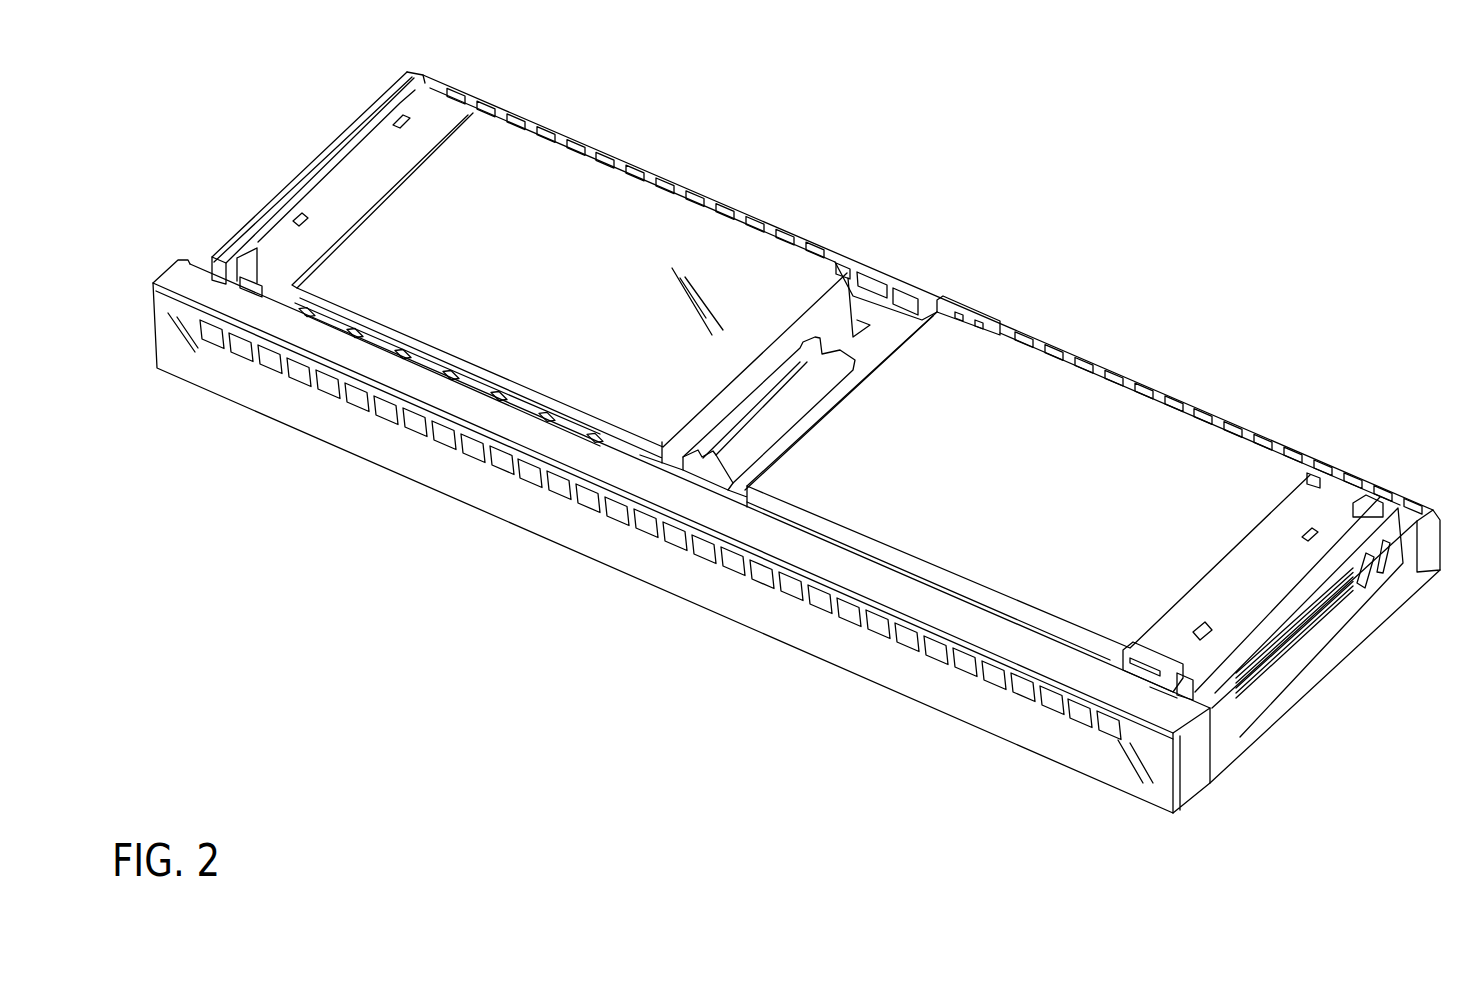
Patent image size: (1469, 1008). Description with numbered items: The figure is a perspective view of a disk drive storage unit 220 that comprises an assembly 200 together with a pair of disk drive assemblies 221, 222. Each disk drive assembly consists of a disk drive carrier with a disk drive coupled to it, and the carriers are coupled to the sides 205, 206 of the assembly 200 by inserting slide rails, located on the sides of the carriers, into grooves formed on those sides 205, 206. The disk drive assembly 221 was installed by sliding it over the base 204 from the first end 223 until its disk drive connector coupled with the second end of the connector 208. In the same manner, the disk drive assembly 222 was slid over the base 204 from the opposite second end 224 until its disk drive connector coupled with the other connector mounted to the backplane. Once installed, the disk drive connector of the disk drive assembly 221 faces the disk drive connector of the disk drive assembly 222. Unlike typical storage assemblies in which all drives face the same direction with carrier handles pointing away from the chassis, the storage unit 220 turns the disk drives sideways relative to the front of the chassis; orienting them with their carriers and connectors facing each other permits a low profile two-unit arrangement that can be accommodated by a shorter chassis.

The assembly 200 is at (1077, 783).
The base 204 is at (1330, 728).
The side 205 is at (681, 536).
The side 206 is at (885, 295).
The connector 208 is at (801, 399).
The disk drive storage unit 220 is at (973, 269).
The disk drive assembly 221 is at (581, 288).
The disk drive assembly 222 is at (1032, 506).
The first end 223 is at (288, 162).
The second end 224 is at (1338, 674).